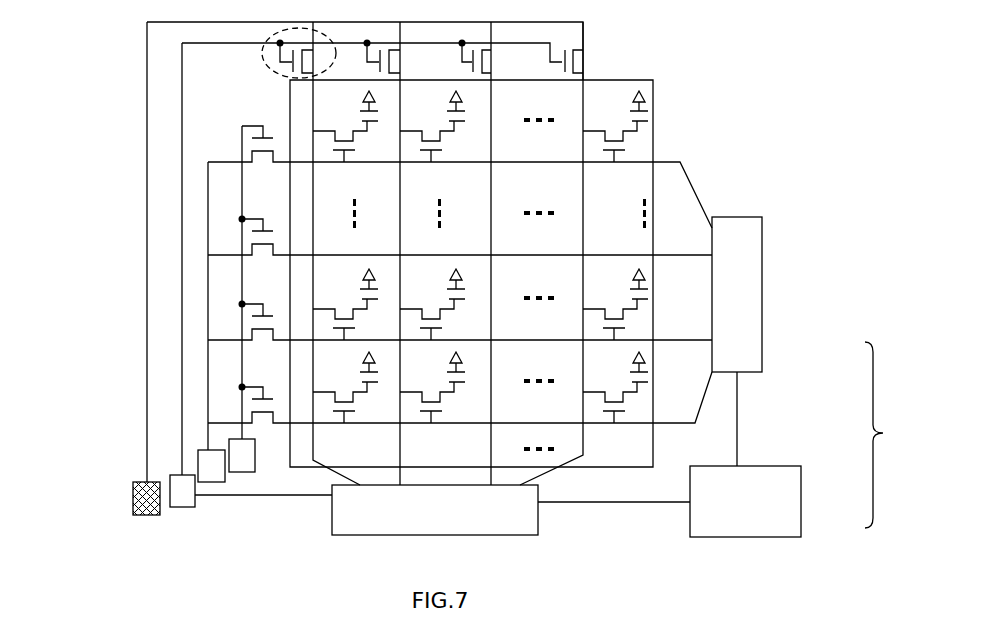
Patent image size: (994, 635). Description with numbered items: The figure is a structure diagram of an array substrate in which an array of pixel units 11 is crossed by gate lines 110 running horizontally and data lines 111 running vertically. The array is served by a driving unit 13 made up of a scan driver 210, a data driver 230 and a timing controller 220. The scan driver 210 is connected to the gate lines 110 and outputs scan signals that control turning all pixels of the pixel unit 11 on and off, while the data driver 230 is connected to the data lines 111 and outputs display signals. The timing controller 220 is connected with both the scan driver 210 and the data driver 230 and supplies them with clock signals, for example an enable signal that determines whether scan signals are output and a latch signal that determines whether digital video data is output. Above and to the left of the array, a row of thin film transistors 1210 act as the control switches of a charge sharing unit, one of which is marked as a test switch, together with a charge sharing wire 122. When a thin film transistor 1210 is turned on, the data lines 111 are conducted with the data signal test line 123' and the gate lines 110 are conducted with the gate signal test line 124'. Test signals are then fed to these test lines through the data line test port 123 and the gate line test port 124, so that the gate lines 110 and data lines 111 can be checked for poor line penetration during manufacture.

The thin film transistor 1210 is at (262, 63).
The data line 111 is at (585, 92).
The gate line 110 is at (670, 160).
The charge sharing wire 122 is at (146, 212).
The data signal test line 123' is at (92, 252).
The gate signal test line 124' is at (145, 306).
The data line test port 123 is at (120, 502).
The gate line test port 124 is at (251, 491).
The pixel unit 11 is at (643, 407).
The driving unit 13 is at (890, 435).
The scan driver 210 is at (747, 362).
The timing controller 220 is at (773, 527).
The data driver 230 is at (513, 527).